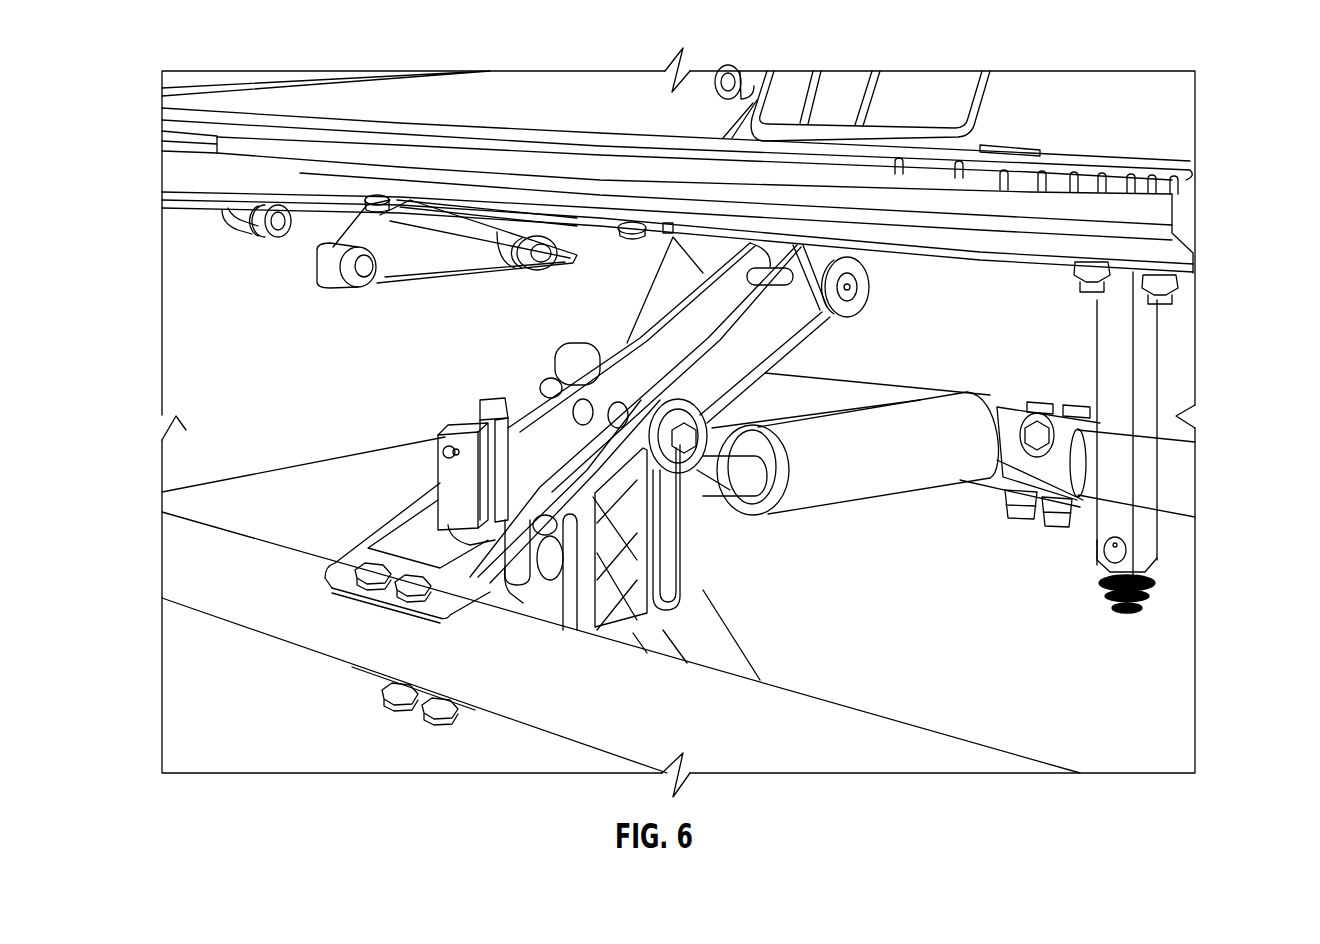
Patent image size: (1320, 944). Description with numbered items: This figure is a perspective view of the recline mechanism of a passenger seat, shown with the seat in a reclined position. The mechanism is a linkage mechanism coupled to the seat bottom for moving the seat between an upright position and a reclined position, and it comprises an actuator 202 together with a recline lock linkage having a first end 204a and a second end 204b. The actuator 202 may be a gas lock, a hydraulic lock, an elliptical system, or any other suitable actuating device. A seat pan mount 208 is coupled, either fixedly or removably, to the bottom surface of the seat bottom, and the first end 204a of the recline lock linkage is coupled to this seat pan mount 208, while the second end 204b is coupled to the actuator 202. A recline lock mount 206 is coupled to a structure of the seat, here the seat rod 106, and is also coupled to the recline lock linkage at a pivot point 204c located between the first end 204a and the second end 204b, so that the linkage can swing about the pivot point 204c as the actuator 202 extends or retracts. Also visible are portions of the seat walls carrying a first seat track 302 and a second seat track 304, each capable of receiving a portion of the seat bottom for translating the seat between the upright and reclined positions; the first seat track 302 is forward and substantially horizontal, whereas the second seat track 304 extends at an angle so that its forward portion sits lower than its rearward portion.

The seat rod 106 is at (1180, 458).
The actuator 202 is at (853, 500).
The first end 204a is at (703, 295).
The second end 204b is at (537, 600).
The pivot point 204c is at (710, 430).
The recline lock mount 206 is at (683, 608).
The seat pan mount 208 is at (867, 262).
The first seat track 302 is at (200, 212).
The second seat track 304 is at (445, 270).